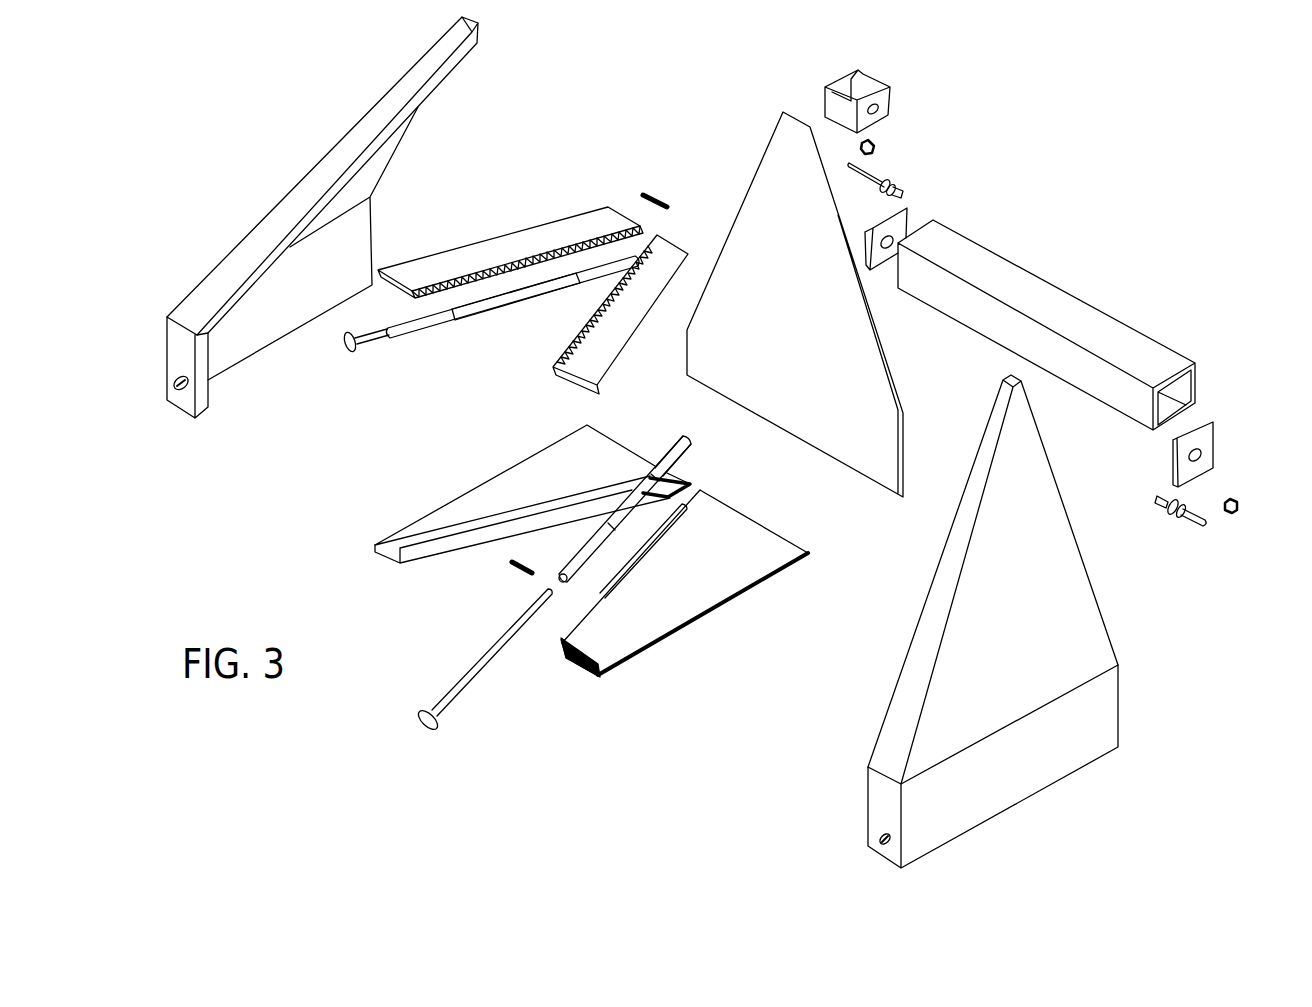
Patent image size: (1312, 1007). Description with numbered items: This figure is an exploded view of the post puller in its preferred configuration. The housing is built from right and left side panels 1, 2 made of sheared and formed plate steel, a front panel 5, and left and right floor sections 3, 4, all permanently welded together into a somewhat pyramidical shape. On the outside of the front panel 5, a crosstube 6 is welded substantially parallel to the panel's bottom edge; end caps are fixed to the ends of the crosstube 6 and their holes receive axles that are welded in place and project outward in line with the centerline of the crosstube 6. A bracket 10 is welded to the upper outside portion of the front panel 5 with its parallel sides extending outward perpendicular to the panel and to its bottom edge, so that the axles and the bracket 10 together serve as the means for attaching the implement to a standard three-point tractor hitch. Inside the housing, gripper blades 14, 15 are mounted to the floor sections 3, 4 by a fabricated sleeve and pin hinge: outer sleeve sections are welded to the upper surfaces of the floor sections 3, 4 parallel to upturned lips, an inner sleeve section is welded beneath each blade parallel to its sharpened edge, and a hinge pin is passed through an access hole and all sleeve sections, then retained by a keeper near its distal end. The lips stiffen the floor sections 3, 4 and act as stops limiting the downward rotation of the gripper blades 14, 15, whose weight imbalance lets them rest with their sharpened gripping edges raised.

The right side panel 1 is at (1064, 623).
The left side panel 2 is at (285, 318).
The left floor section 3 is at (540, 468).
The right floor section 4 is at (715, 570).
The front panel 5 is at (777, 173).
The crosstube 6 is at (1055, 300).
The bracket 10 is at (890, 88).
The gripper blade 14 is at (613, 334).
The gripper blade 15 is at (592, 220).